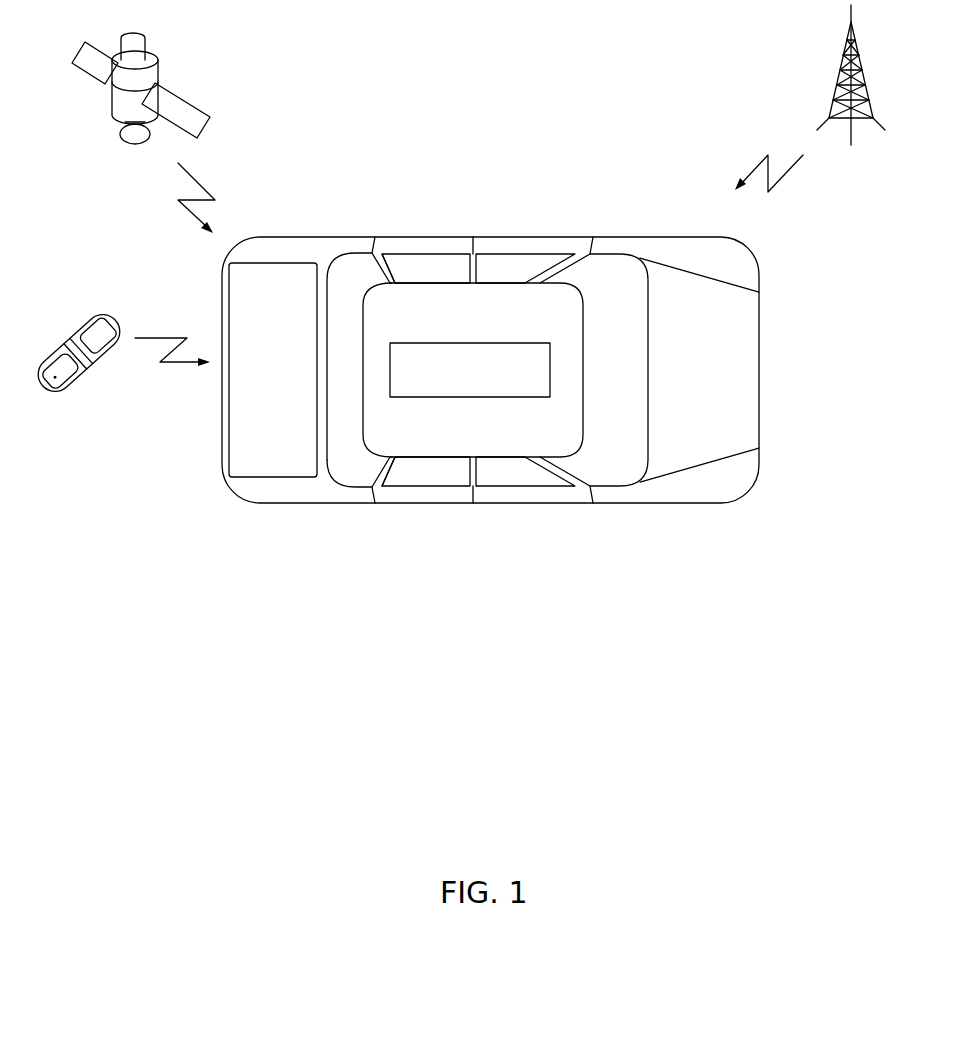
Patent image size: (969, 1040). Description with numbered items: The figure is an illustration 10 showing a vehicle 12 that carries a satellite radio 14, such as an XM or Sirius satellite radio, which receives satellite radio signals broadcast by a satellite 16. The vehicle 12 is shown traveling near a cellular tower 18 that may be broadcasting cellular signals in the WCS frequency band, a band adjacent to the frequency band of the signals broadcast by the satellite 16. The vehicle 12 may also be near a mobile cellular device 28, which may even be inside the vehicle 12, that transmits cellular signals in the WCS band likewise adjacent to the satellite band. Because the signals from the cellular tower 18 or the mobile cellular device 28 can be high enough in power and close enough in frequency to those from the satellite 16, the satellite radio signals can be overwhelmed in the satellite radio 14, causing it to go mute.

The illustration 10 is at (500, 117).
The vehicle 12 is at (495, 237).
The satellite radio 14 is at (510, 338).
The satellite 16 is at (155, 75).
The cellular tower 18 is at (838, 72).
The mobile cellular device 28 is at (100, 313).